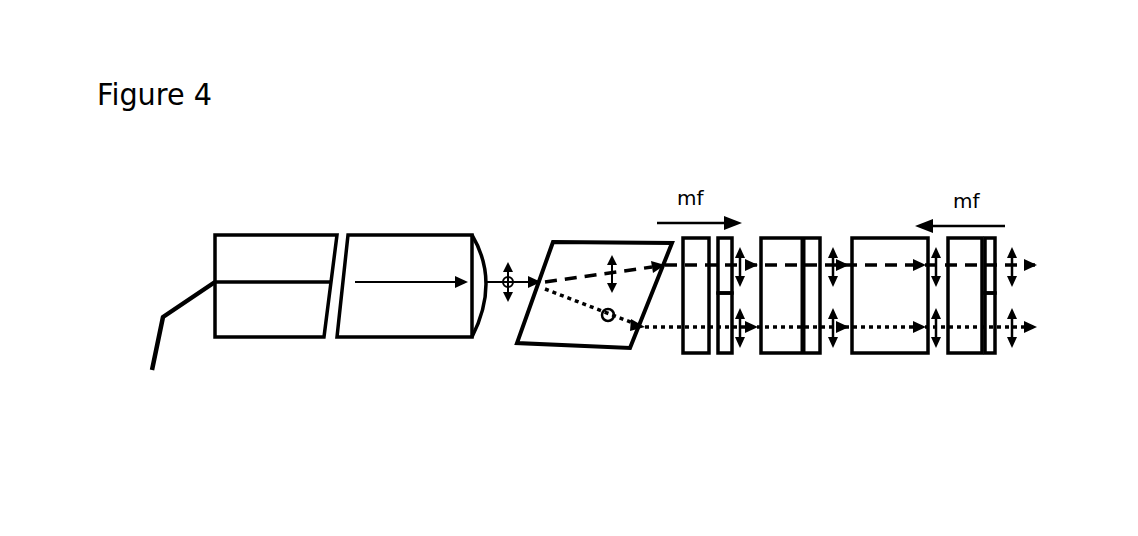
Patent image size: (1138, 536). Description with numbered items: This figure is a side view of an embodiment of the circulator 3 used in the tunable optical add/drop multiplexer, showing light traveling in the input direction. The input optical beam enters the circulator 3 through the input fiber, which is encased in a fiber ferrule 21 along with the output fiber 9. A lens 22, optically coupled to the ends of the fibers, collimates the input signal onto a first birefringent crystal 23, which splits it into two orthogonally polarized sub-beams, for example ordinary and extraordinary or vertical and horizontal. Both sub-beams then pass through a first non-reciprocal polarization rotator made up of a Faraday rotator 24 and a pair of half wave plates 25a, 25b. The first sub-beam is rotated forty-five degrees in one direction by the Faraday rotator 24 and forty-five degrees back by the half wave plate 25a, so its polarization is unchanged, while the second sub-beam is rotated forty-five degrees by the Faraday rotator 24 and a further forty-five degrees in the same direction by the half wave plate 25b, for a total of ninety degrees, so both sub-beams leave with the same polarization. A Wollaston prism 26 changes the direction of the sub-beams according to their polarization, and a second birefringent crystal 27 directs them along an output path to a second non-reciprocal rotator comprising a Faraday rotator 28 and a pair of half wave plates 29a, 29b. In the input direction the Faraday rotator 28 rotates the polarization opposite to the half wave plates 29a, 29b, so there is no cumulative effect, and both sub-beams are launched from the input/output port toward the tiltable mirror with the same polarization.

The circulator 3 is at (466, 150).
The output fiber 9 is at (163, 309).
The fiber ferrule 21 is at (277, 325).
The lens 22 is at (425, 328).
The first birefringent crystal 23 is at (615, 252).
The Faraday rotator 24 is at (688, 350).
The half wave plate 25a is at (730, 242).
The half wave plate 25b is at (723, 353).
The Wollaston prism 26 is at (805, 238).
The second birefringent crystal 27 is at (892, 350).
The Faraday rotator 28 is at (972, 353).
The half wave plate 29a is at (997, 247).
The half wave plate 29b is at (995, 357).